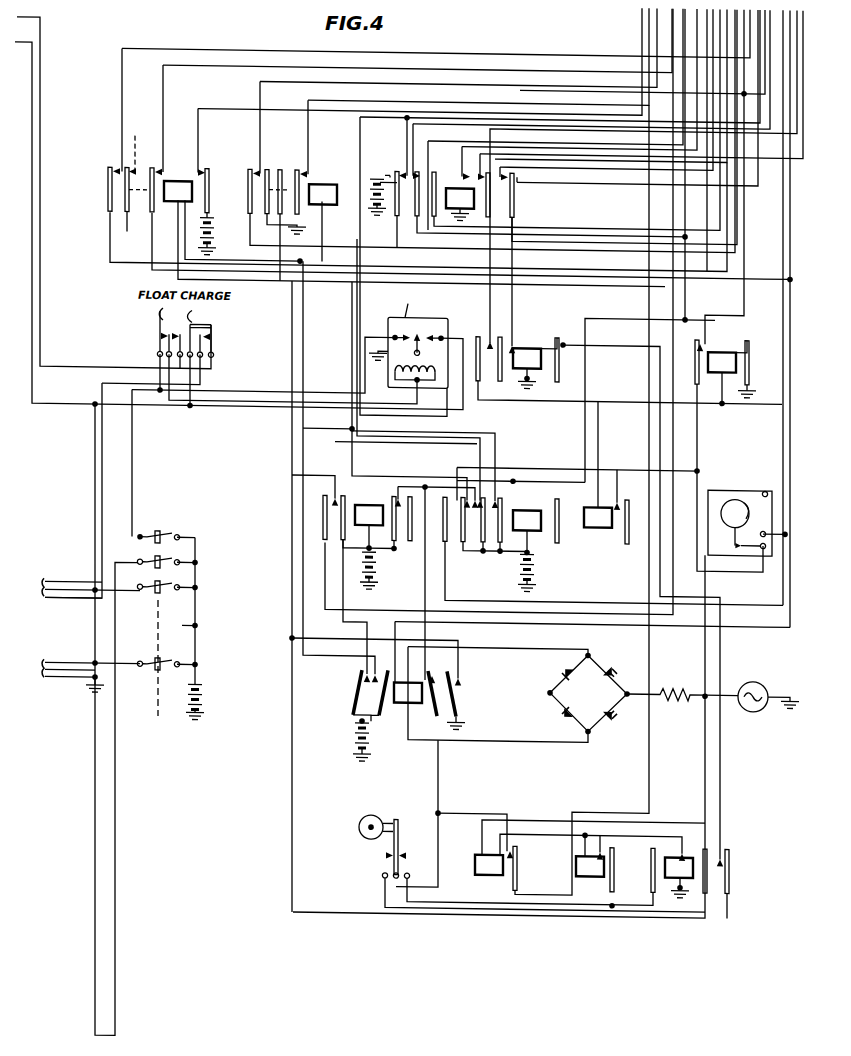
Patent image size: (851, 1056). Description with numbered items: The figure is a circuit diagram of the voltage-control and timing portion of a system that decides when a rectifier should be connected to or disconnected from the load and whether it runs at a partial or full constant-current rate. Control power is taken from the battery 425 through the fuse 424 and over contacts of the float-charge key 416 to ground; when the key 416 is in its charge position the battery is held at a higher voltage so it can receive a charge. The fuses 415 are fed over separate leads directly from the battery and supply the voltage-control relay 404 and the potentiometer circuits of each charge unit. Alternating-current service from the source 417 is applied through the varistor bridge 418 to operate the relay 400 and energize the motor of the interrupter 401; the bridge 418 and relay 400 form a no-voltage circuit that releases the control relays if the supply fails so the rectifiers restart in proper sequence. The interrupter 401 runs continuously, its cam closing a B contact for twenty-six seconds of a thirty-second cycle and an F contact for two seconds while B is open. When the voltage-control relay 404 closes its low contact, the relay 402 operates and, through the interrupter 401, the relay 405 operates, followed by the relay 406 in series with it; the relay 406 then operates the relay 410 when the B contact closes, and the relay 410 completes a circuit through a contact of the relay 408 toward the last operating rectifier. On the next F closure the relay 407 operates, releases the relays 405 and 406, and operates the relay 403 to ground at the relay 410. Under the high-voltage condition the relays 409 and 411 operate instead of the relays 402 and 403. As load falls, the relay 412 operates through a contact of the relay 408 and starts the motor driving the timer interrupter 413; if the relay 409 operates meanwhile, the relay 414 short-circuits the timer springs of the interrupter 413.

The relay 400 is at (401, 704).
The interrupter 401 is at (383, 818).
The relay 402 is at (370, 505).
The relay 403 is at (176, 185).
The voltage-control relay 404 is at (400, 318).
The relay 405 is at (490, 876).
The relay 406 is at (590, 876).
The relay 407 is at (680, 876).
The relay 408 is at (458, 187).
The relay 409 is at (530, 552).
The relay 410 is at (513, 343).
The relay 411 is at (319, 186).
The relay 412 is at (728, 348).
The timer interrupter 413 is at (746, 508).
The relay 414 is at (585, 522).
The fuses 415 is at (157, 535).
The float-charge key 416 is at (190, 316).
The alternating-current source 417 is at (762, 678).
The varistor bridge 418 is at (588, 693).
The fuse 424 is at (178, 560).
The battery 425 is at (207, 700).